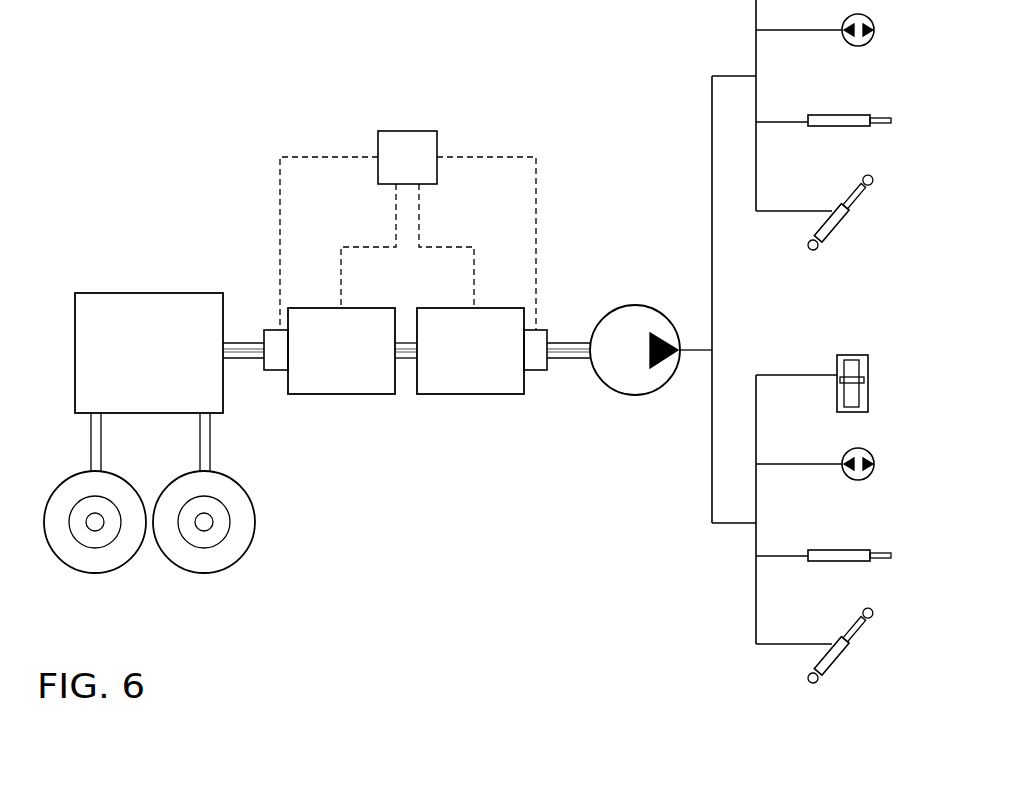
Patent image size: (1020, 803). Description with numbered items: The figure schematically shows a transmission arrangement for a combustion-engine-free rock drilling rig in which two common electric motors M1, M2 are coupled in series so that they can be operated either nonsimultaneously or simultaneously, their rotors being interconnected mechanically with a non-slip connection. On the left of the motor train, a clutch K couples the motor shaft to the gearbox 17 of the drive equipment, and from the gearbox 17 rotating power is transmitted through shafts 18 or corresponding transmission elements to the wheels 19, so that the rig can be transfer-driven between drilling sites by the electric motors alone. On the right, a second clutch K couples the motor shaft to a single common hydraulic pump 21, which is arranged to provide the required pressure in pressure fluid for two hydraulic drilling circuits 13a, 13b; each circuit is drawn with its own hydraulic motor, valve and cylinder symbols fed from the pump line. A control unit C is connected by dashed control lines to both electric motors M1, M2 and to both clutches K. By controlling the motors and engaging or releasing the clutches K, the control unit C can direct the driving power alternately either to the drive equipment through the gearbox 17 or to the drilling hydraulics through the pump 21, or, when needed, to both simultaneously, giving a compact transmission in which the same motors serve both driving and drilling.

The hydraulic circuit 13a is at (736, 39).
The hydraulic circuit 13b is at (708, 583).
The gearbox 17 is at (162, 362).
The shafts 18 is at (205, 440).
The wheels 19 is at (222, 555).
The hydraulic pump 21 is at (623, 327).
The clutch K is at (273, 344).
The control unit C is at (415, 173).
The first electric motor M1 is at (357, 362).
The second electric motor M2 is at (491, 362).